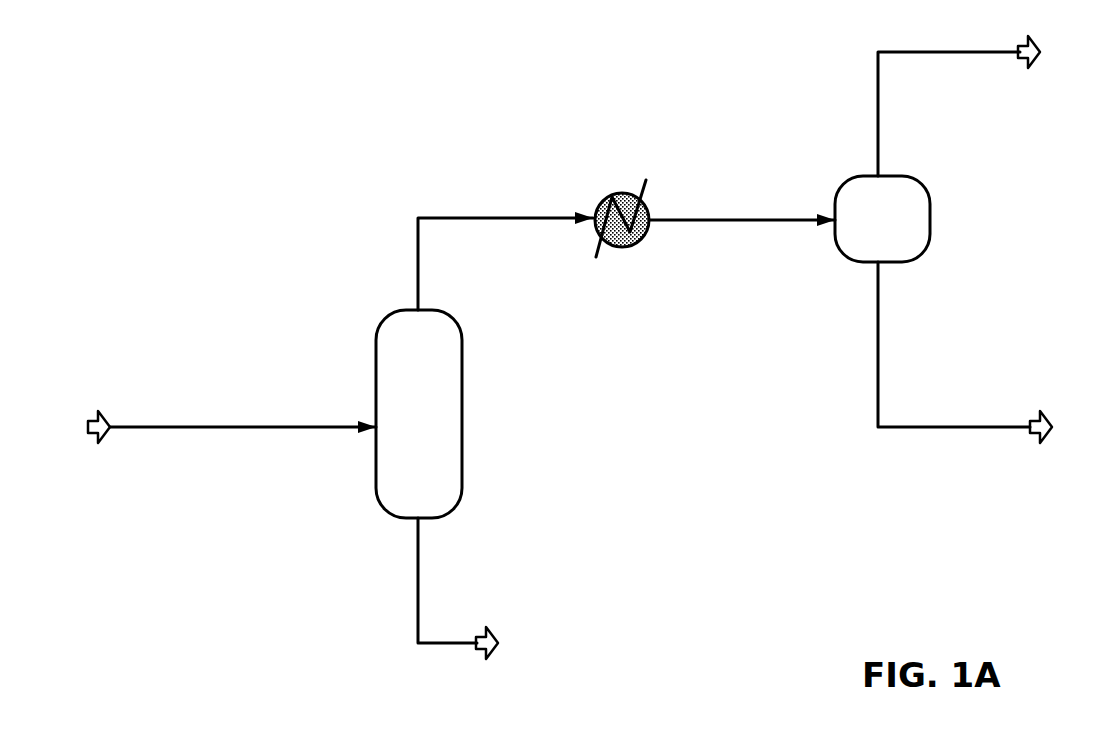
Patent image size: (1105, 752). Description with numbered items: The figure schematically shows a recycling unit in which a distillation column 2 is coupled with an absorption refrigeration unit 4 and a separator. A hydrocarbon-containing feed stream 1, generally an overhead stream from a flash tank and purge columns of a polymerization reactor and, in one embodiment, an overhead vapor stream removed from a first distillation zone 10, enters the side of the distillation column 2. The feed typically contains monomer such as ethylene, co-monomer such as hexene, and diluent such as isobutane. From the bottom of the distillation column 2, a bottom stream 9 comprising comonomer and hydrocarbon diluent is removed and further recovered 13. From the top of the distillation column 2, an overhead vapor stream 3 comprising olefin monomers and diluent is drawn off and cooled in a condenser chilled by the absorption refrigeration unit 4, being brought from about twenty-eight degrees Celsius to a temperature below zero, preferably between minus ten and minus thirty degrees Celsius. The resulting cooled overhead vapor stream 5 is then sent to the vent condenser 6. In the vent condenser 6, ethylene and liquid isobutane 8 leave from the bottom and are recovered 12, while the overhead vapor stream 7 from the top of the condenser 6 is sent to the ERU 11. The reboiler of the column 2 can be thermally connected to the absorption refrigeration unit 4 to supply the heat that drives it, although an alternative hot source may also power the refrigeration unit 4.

The hydrocarbon-containing feed stream 1 is at (200, 427).
The distillation column 2 is at (436, 378).
The overhead vapor stream 3 is at (468, 216).
The absorption refrigeration unit 4 is at (607, 196).
The cooled overhead vapor stream 5 is at (700, 217).
The vent condenser 6 is at (910, 230).
The overhead vapor stream from the condenser 7 is at (923, 53).
The ethylene and liquid isobutane 8 is at (880, 378).
The bottom stream 9 is at (416, 624).
The first distillation zone 10 is at (90, 418).
The ERU 11 is at (1031, 62).
The recovery of ethylene and liquid isobutane 12 is at (1042, 437).
The recovery of bottom stream 13 is at (493, 656).